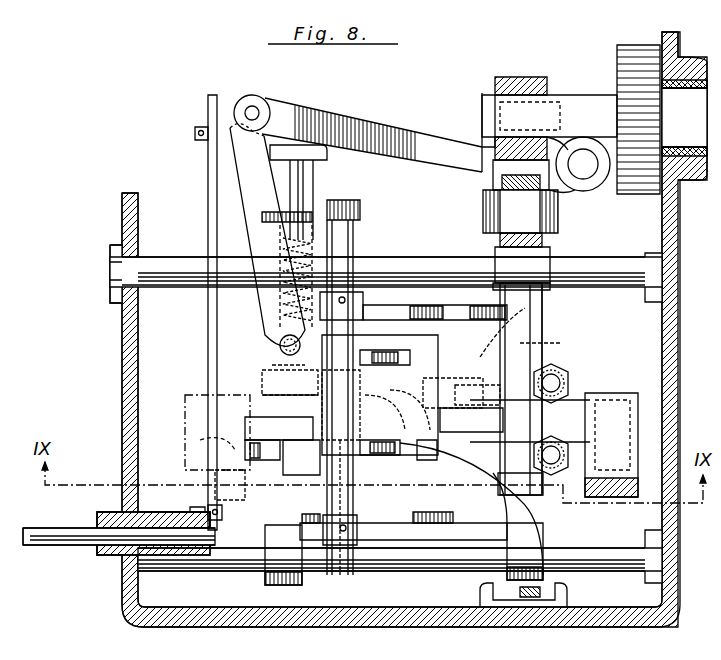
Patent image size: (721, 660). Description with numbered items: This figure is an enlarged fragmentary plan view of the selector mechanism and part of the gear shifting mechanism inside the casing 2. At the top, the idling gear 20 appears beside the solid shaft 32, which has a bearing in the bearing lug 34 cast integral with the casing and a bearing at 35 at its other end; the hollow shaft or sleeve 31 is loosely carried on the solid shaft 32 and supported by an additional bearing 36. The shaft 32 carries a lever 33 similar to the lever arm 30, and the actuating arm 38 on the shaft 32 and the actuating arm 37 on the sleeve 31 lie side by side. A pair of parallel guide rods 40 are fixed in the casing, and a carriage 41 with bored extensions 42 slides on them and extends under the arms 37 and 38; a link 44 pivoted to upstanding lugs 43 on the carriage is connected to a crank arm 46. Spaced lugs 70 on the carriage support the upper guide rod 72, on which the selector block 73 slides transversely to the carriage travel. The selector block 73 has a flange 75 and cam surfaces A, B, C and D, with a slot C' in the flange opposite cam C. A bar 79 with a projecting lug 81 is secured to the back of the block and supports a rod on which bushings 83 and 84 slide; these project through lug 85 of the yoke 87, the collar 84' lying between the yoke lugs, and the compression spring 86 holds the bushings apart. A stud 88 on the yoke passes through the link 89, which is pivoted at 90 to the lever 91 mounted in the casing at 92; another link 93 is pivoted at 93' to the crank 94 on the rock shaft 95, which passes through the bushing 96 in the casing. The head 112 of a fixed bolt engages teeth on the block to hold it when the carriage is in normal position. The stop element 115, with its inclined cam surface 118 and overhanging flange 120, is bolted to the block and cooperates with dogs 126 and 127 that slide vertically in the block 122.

The casing 2 is at (670, 345).
The idling gear 20 is at (632, 56).
The lever arm 30 is at (500, 240).
The hollow shaft or sleeve 31 is at (546, 318).
The solid shaft 32 is at (510, 640).
The lever 33 is at (500, 184).
The bearing lug 34 is at (520, 80).
The bearing 35 is at (550, 603).
The additional bearing 36 is at (485, 210).
The actuating arm 37 is at (555, 371).
The actuating arm 38 is at (482, 470).
The guide rods 40 is at (408, 270).
The carriage 41 is at (465, 355).
The extensions 42 is at (285, 585).
The upstanding lugs 43 is at (455, 382).
The link 44 is at (582, 410).
The crank arm 46 is at (611, 445).
The upstanding lugs 70 is at (460, 314).
The upper guide rod 72 is at (354, 498).
The selector block 73 is at (380, 395).
The flange 75 is at (435, 462).
The bar 79 is at (354, 243).
The projecting lug 81 is at (310, 155).
The bushing 83 is at (276, 396).
The bushing 84 is at (328, 200).
The collar 84' is at (241, 230).
The lug 85 is at (312, 216).
The compression spring 86 is at (278, 306).
The yoke 87 is at (268, 361).
The stud 88 is at (280, 347).
The link 89 is at (245, 207).
The pivotal connection 90 is at (255, 100).
The lever 91 is at (343, 117).
The pivot 92 is at (584, 179).
The link 93 is at (191, 312).
The pivotal connection 93' is at (234, 518).
The crank 94 is at (190, 510).
The rock shaft 95 is at (65, 542).
The bushing 96 is at (100, 557).
The head 112 is at (342, 401).
The stop element 115 is at (268, 470).
The inclined cam surface 118 is at (268, 420).
The overhanging flange 120 is at (304, 476).
The block 122 is at (198, 397).
The dog 126 is at (250, 456).
The dog 127 is at (200, 428).
The cam surface A is at (388, 452).
The cam surface B is at (380, 459).
The cam surface C is at (397, 398).
The slot C' is at (424, 317).
The cam surface D is at (380, 340).